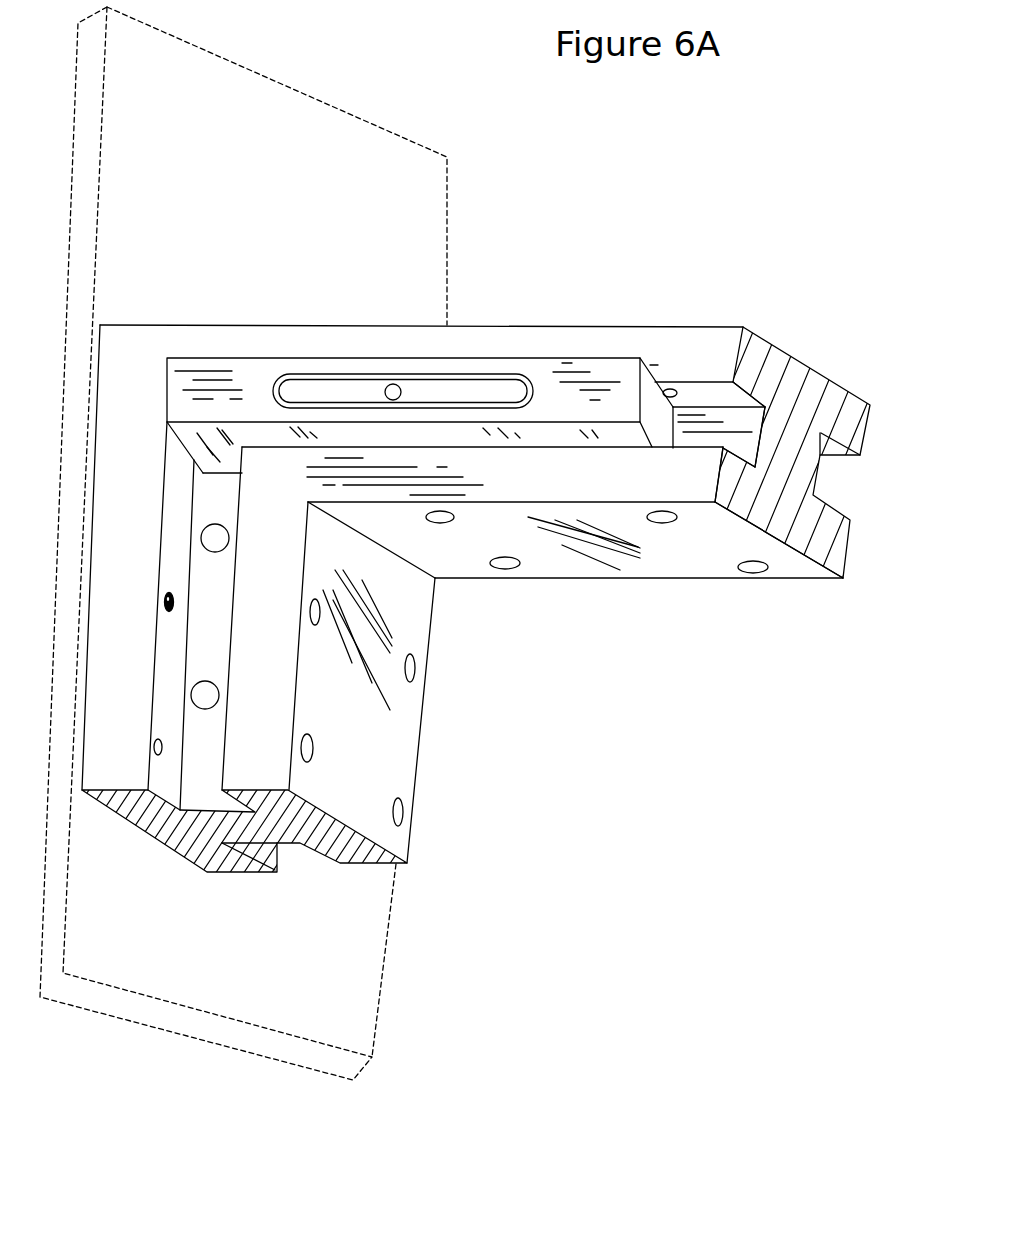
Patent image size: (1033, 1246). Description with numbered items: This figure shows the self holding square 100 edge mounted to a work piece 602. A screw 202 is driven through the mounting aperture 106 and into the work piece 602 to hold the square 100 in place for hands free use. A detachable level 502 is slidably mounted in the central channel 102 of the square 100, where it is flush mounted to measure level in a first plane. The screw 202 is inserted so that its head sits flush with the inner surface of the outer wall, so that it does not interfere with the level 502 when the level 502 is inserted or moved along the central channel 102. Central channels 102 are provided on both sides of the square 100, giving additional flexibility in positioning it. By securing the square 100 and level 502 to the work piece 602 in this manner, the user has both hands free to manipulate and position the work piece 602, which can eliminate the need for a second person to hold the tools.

The self holding square 100 is at (712, 560).
The central channel 102 is at (293, 858).
The mounting aperture 106 is at (163, 598).
The screw 202 is at (167, 597).
The level 502 is at (533, 373).
The work piece 602 is at (345, 1003).